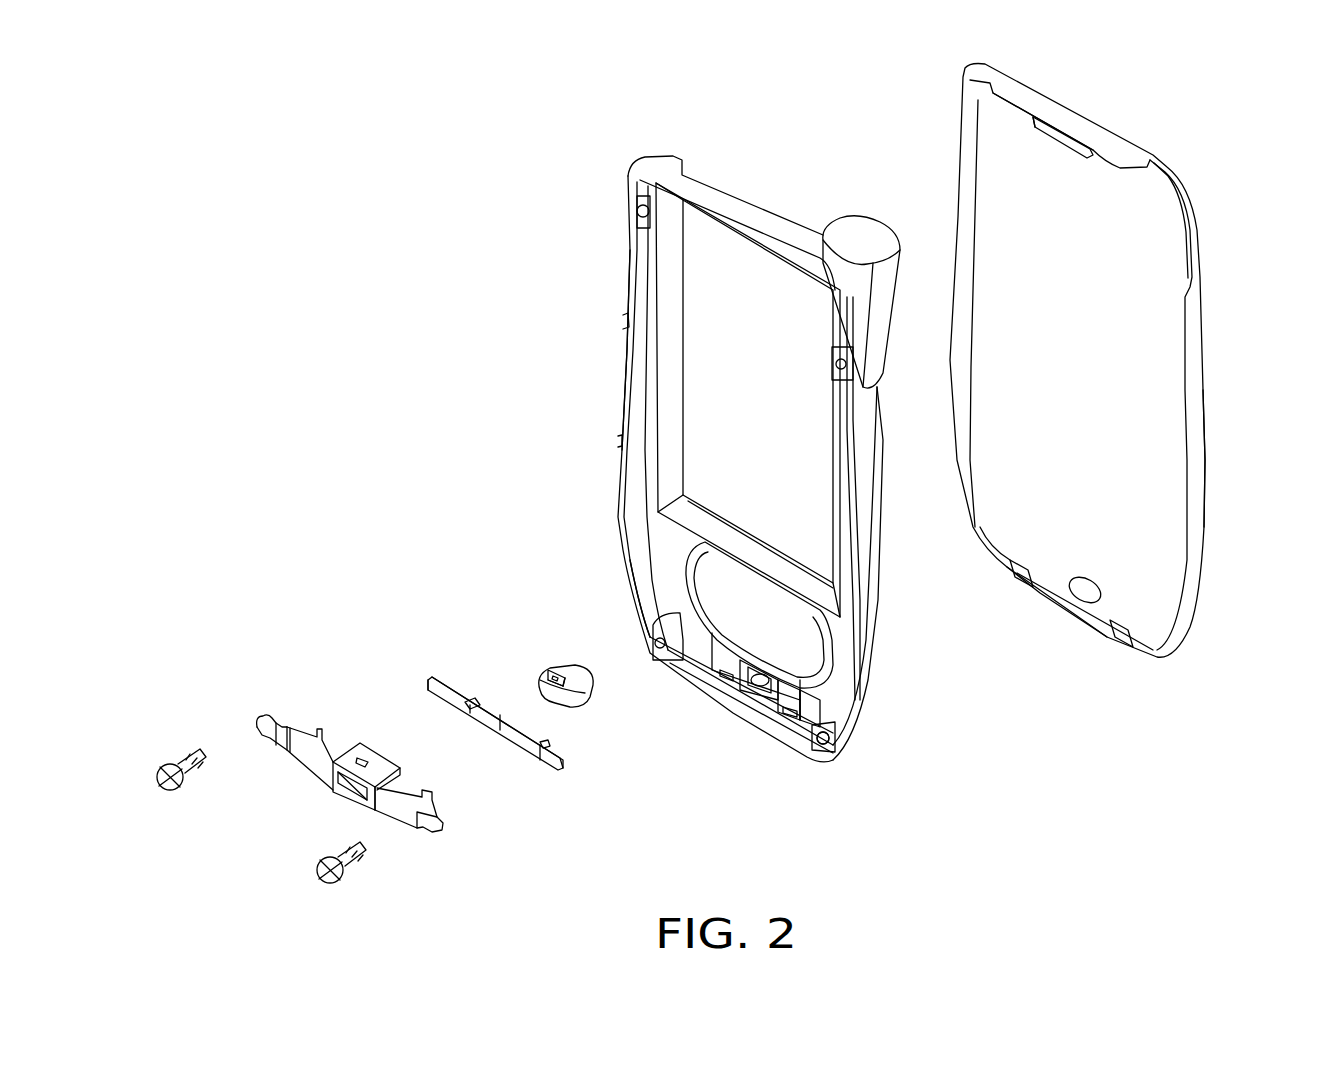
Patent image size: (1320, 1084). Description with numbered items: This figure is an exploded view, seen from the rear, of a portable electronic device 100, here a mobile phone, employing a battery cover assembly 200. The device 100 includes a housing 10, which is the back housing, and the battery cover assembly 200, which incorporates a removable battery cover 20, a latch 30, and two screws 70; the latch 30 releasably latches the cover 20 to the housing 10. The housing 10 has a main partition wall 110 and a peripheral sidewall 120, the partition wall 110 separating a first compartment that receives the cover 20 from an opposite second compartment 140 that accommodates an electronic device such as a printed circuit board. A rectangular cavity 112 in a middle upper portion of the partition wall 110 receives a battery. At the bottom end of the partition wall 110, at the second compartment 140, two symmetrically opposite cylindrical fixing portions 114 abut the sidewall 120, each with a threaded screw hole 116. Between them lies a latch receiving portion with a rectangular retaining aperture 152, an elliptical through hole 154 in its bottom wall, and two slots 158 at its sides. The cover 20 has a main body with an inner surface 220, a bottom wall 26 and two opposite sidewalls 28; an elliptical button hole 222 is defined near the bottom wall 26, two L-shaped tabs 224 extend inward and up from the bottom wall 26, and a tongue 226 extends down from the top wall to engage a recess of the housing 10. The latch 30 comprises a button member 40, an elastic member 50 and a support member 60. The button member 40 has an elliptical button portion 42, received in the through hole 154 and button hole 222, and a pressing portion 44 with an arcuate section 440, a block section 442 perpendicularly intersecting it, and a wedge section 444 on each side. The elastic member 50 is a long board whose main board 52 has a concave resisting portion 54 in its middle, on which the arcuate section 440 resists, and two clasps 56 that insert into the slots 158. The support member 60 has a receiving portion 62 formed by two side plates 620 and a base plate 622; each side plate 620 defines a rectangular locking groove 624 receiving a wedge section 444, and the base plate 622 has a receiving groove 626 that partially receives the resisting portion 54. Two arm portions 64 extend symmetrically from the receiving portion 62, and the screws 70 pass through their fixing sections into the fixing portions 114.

The portable electronic device 100 is at (670, 115).
The housing 10 is at (600, 197).
The rectangular cavity 112 is at (712, 325).
The peripheral sidewall 120 is at (635, 483).
The main partition wall 110 is at (672, 543).
The second compartment 140 is at (787, 620).
The retaining aperture 152 is at (757, 697).
The through hole 154 is at (815, 697).
The slots 158 is at (790, 717).
The fixing portions 114 is at (833, 727).
The threaded screw hole 116 is at (840, 753).
The removable battery cover 20 is at (1093, 655).
The battery cover assembly 200 is at (937, 800).
The inner surface 220 is at (1143, 245).
The tongue 226 is at (1057, 130).
The sidewalls 28 is at (1195, 398).
The L-shaped tabs 224 is at (1010, 575).
The bottom wall 26 is at (1033, 598).
The button hole 222 is at (1090, 590).
The button member 40 is at (565, 689).
The button portion 42 is at (578, 670).
The pressing portion 44 is at (573, 563).
The arcuate section 440 is at (540, 690).
The block section 442 is at (550, 668).
The wedge section 444 is at (527, 642).
The elastic member 50 is at (481, 751).
The main board 52 is at (428, 688).
The resisting portion 54 is at (488, 723).
The clasps 56 is at (472, 697).
The support member 60 is at (334, 800).
The receiving portion 62 is at (283, 853).
The side plates 620 is at (347, 800).
The base plate 622 is at (363, 810).
The locking groove 624 is at (362, 761).
The receiving groove 626 is at (333, 790).
The arm portions 64 is at (263, 738).
The screws 70 is at (193, 753).
The latch 30 is at (700, 820).